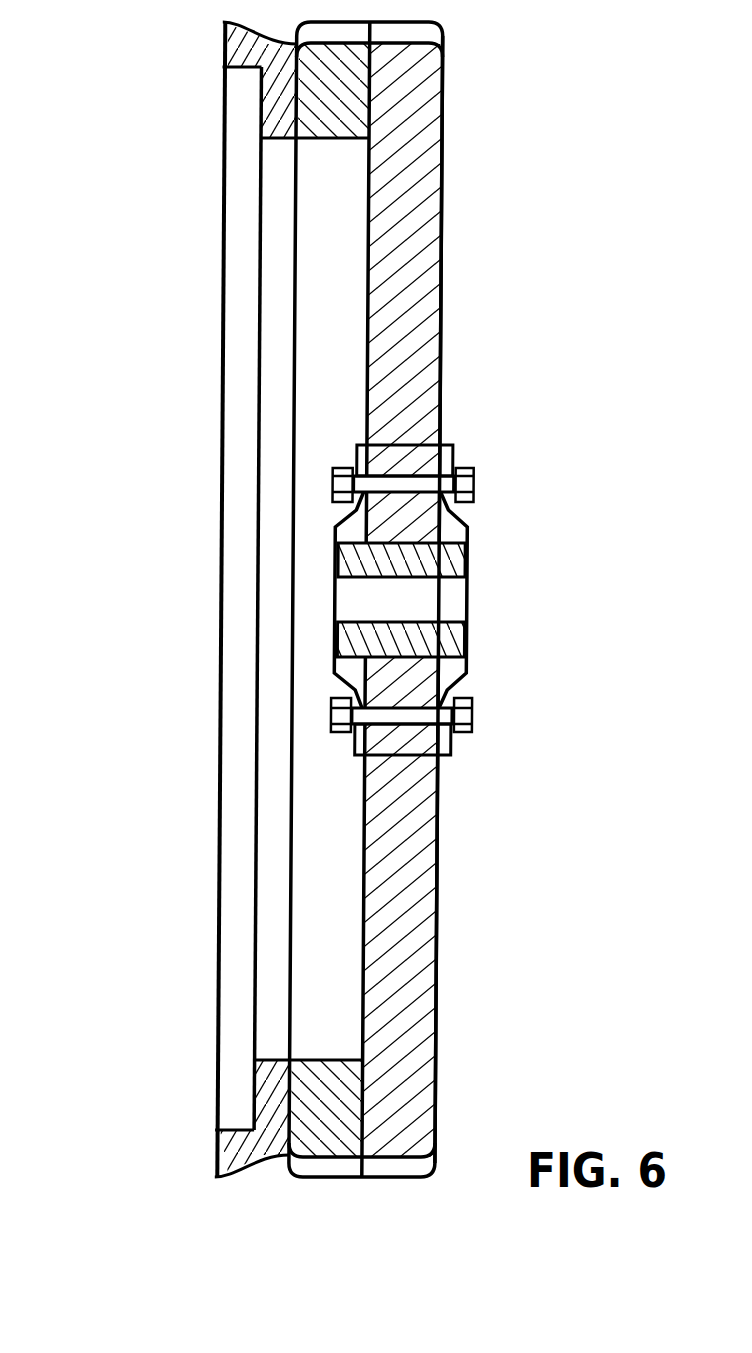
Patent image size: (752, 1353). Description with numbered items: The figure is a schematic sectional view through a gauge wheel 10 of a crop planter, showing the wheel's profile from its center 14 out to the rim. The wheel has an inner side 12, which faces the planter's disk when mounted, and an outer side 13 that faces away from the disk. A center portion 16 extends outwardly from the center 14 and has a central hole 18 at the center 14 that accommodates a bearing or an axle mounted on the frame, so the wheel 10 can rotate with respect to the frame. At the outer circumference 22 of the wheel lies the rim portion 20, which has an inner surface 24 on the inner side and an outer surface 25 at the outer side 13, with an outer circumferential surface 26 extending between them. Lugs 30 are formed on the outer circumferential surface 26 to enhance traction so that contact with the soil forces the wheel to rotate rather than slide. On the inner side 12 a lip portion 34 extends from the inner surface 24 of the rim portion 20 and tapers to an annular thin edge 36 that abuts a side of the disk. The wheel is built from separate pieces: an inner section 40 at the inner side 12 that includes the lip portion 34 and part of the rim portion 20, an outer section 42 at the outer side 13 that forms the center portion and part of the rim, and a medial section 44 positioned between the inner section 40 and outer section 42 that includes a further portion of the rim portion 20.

The gauge wheel 10 is at (520, 85).
The inner side 12 is at (176, 470).
The outer side 13 is at (527, 456).
The center 14 is at (504, 603).
The center portion 16 is at (432, 337).
The central hole 18 is at (455, 693).
The rim portion 20 is at (441, 109).
The outer circumference 22 is at (274, 1208).
The inner surface 24 is at (216, 1102).
The outer surface 25 is at (436, 1092).
The outer circumferential surface 26 is at (401, 1183).
The lugs 30 is at (412, 1165).
The lip portion 34 is at (236, 1148).
The thin edge 36 is at (230, 1178).
The inner section 40 is at (268, 850).
The outer section 42 is at (410, 955).
The medial section 44 is at (343, 890).